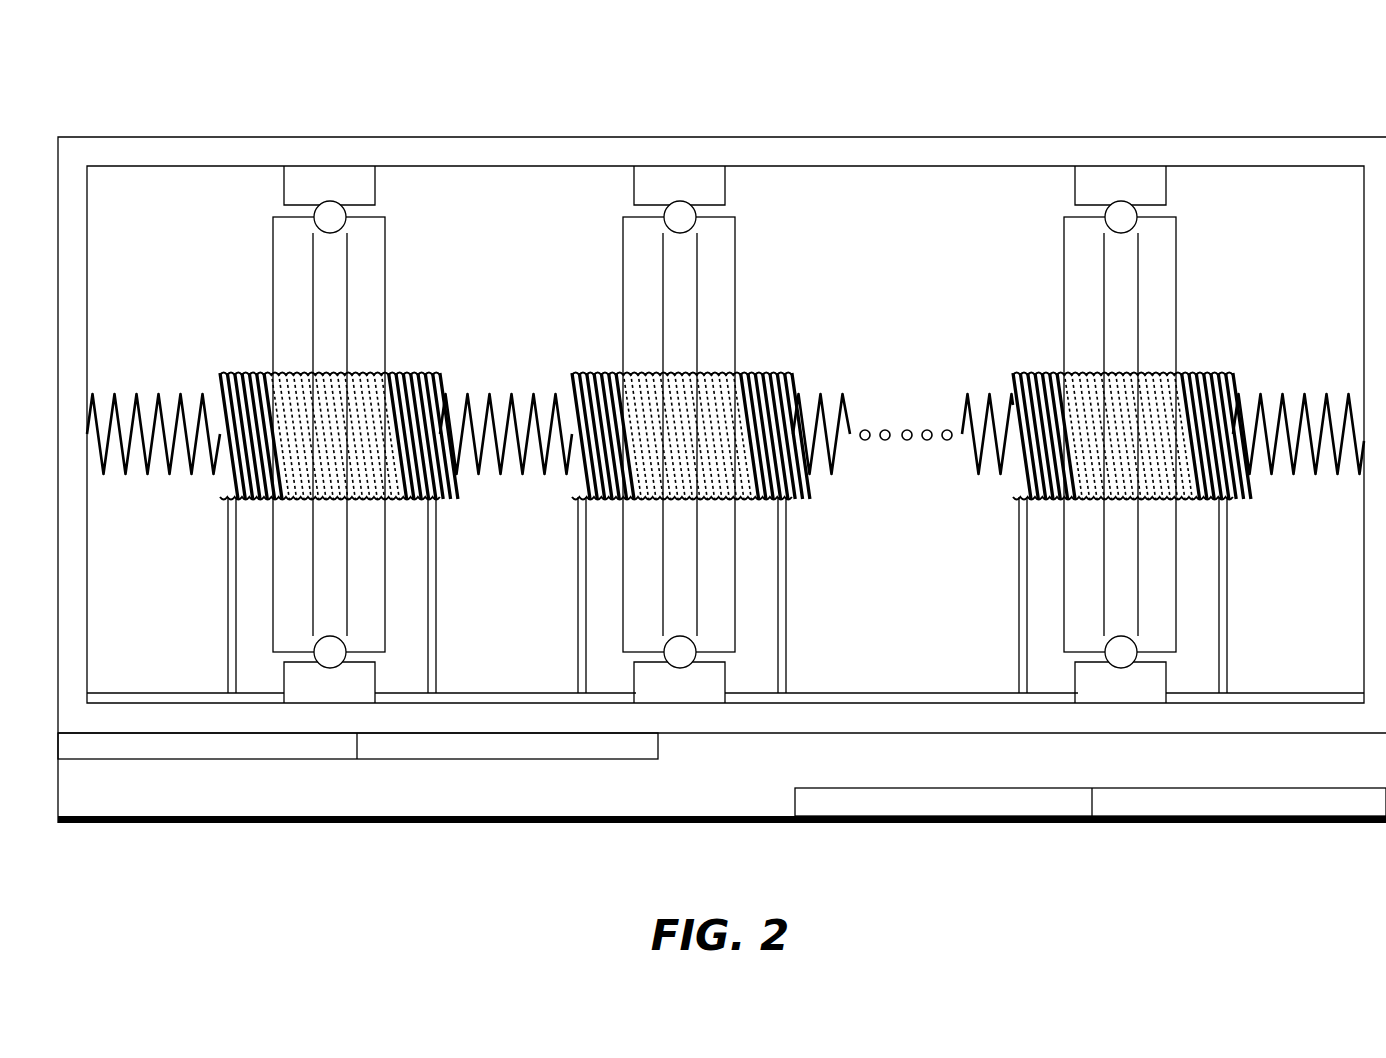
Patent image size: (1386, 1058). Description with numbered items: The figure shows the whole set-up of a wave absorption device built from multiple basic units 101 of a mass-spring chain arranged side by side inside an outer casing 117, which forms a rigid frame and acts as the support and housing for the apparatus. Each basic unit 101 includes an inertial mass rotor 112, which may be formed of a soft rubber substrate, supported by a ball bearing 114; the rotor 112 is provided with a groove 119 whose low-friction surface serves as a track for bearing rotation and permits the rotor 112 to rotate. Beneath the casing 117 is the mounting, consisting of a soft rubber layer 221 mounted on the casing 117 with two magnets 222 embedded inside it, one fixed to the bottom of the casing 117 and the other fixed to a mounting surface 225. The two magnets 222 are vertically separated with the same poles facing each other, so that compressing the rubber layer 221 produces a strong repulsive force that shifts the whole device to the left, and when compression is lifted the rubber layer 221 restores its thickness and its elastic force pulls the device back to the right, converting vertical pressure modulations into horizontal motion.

The basic unit 101 is at (740, 367).
The inertial mass rotor 112 is at (273, 250).
The ball bearing 114 is at (336, 654).
The outer casing 117 is at (447, 137).
The groove 119 is at (333, 572).
The rubber layer 221 is at (747, 790).
The magnets 222 is at (308, 760).
The mounting surface 225 is at (160, 823).